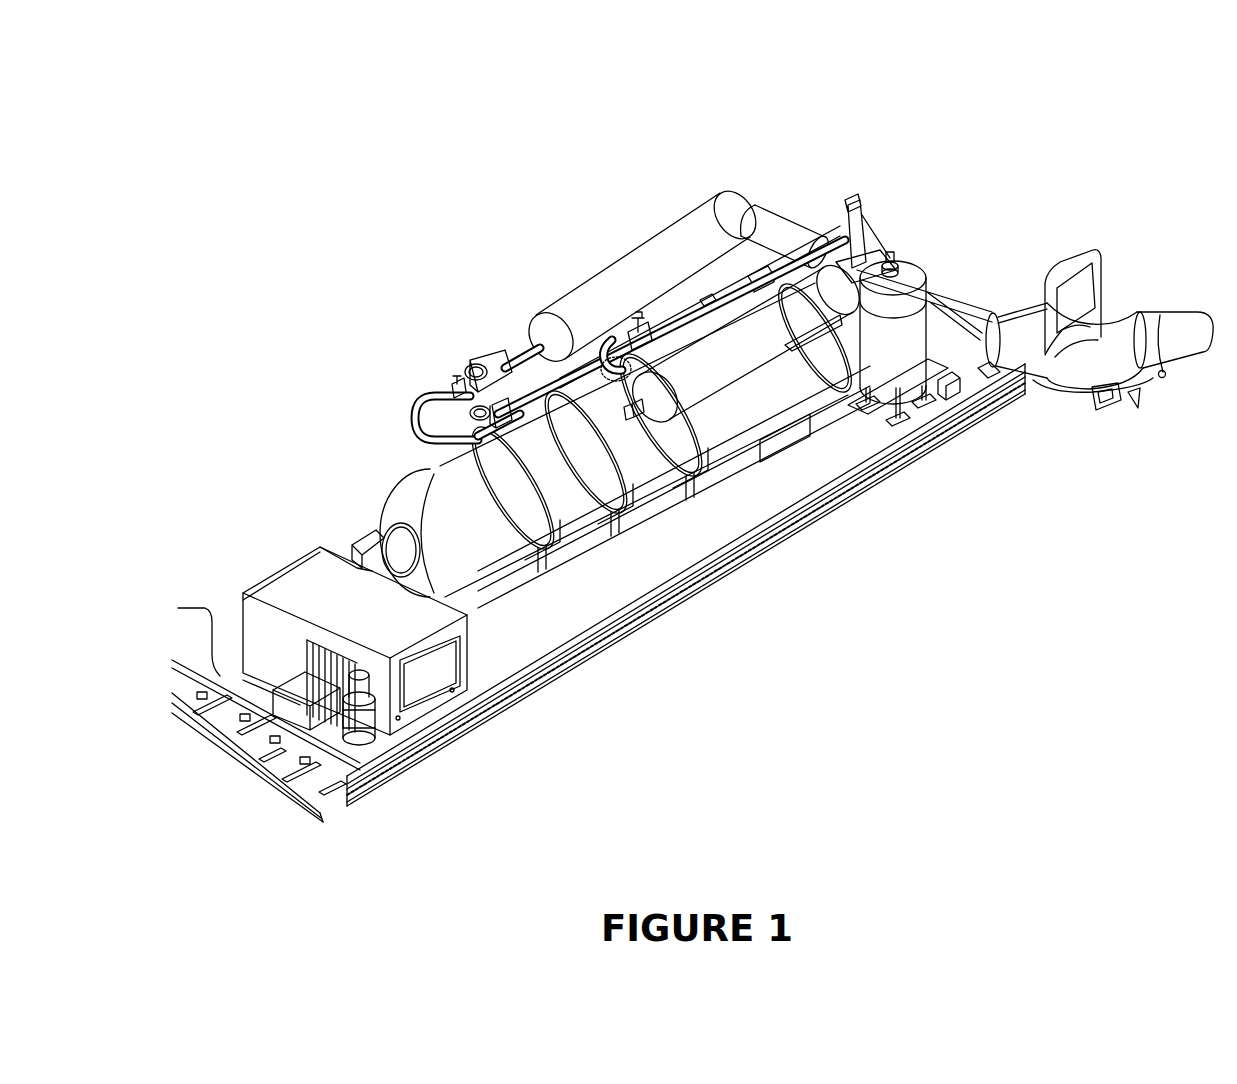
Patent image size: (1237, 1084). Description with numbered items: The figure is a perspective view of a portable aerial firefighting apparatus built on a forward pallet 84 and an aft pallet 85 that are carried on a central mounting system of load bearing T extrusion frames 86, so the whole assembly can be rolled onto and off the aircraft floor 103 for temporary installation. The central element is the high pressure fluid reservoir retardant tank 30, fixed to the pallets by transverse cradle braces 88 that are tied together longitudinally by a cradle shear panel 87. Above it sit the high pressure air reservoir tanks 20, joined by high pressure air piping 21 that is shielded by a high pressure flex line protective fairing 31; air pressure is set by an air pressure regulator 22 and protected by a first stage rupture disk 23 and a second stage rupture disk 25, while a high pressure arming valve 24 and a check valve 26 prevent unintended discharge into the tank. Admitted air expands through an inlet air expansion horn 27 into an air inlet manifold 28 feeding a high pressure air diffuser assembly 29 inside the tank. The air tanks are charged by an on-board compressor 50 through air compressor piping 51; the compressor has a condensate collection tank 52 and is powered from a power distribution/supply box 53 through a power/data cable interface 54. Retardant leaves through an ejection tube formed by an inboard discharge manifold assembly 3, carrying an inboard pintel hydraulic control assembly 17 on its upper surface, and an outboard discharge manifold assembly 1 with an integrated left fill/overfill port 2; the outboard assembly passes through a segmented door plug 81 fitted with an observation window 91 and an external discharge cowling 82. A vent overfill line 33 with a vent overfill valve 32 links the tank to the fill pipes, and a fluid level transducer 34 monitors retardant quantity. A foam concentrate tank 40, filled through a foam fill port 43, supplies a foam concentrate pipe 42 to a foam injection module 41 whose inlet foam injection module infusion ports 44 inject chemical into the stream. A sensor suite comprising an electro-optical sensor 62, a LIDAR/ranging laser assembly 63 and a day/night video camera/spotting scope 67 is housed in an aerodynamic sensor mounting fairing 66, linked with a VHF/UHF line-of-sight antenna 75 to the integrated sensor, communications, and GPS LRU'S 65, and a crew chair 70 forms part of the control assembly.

The outboard discharge manifold assembly 1 is at (1185, 330).
The integrated left fill/overfill port 2 is at (1162, 377).
The inboard discharge manifold assembly 3 is at (1007, 360).
The inboard pintel hydraulic control assembly 17 is at (1027, 323).
The high pressure air reservoir tank 20 is at (605, 287).
The high pressure air piping 21 is at (420, 417).
The air pressure regulator 22 is at (500, 367).
The first stage rupture disk 23 is at (477, 370).
The high pressure arming valve 24 is at (455, 382).
The second stage rupture disk 25 is at (477, 427).
The check valve 26 is at (507, 373).
The inlet air expansion horn 27 is at (578, 367).
The air inlet manifold 28 is at (608, 370).
The high pressure air diffuser assembly 29 is at (625, 377).
The high pressure fluid reservoir retardant tank 30 is at (397, 482).
The high pressure flex line protective fairing 31 is at (795, 247).
The vent overfill valve 32 is at (638, 323).
The vent overfill line 33 is at (697, 295).
The fluid level transducer 34 is at (760, 280).
The foam concentrate tank 40 is at (882, 373).
The foam injection module 41 is at (993, 320).
The foam concentrate pipe 42 is at (980, 367).
The foam fill port 43 is at (897, 270).
The inlet foam injection module infusion port 44 is at (902, 403).
The on-board compressor 50 is at (268, 590).
The air compressor piping 51 is at (353, 540).
The condensate collection tank 52 is at (353, 713).
The power distribution/supply box 53 is at (303, 690).
The power/data cable interface 54 is at (178, 608).
The hyperspectral/infra red electro-optical sensor 62 is at (1098, 403).
The ballistic winds LIDAR/ranging laser assembly 63 is at (1112, 393).
The integrated sensor, communications, and GPS LRU'S 65 is at (947, 387).
The aerodynamic sensor mounting fairing 66 is at (1133, 397).
The day/night video camera/spotting scope 67 is at (1113, 397).
The crew chair 70 is at (865, 263).
The VHF/UHF line-of-sight antenna 75 is at (1137, 393).
The segmented door plug assembly 81 is at (1095, 327).
The external discharge cowling 82 is at (1065, 390).
The forward pallet 84 is at (640, 347).
The aft pallet 85 is at (925, 410).
The load bearing T extrusion frame 86 is at (492, 433).
The cradle shear panel 87 is at (802, 460).
The transverse cradle brace 88 is at (548, 367).
The observation window 91 is at (1065, 298).
The aircraft floor 103 is at (313, 807).